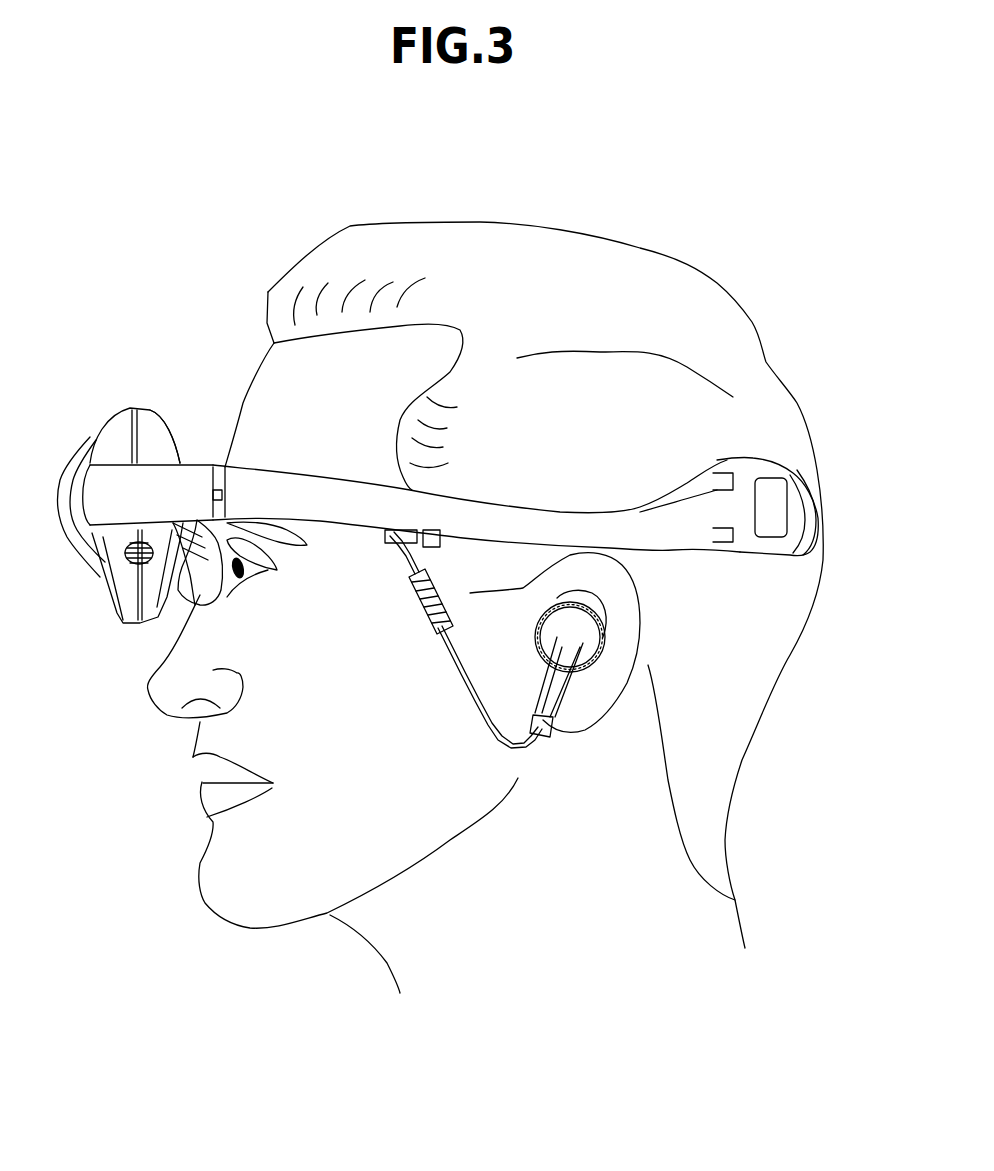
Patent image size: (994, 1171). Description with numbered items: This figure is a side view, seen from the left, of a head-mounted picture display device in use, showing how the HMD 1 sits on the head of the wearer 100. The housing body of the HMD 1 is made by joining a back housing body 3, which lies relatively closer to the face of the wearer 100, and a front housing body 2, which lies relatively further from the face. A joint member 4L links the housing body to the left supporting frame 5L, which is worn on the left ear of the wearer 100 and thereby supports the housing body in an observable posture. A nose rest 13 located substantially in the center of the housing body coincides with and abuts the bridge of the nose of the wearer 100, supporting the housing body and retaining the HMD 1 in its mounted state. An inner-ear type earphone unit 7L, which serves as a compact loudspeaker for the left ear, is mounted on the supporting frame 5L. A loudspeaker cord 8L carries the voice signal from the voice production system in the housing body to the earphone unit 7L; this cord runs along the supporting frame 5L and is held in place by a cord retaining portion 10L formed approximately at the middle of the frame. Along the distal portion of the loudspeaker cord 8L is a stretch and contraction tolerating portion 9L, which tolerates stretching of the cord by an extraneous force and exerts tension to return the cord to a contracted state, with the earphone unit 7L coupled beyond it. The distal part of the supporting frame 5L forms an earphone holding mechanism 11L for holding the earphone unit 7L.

The wearer 100 is at (468, 220).
The HMD 1 is at (152, 399).
The front housing body 2 is at (122, 427).
The back housing body 3 is at (160, 438).
The joint member 4L is at (110, 507).
The supporting frame 5L is at (253, 480).
The nose rest 13 is at (197, 580).
The cord retaining portion 10L is at (433, 547).
The stretch and contraction tolerating portion 9L is at (430, 620).
The loudspeaker cord 8L is at (477, 703).
The earphone unit 7L is at (593, 645).
The earphone holding mechanism 11L is at (790, 483).